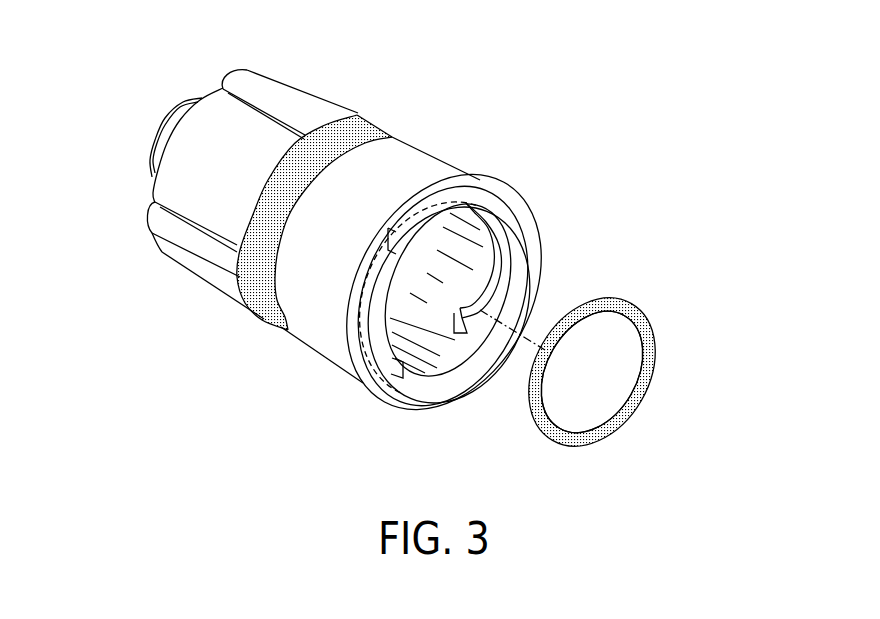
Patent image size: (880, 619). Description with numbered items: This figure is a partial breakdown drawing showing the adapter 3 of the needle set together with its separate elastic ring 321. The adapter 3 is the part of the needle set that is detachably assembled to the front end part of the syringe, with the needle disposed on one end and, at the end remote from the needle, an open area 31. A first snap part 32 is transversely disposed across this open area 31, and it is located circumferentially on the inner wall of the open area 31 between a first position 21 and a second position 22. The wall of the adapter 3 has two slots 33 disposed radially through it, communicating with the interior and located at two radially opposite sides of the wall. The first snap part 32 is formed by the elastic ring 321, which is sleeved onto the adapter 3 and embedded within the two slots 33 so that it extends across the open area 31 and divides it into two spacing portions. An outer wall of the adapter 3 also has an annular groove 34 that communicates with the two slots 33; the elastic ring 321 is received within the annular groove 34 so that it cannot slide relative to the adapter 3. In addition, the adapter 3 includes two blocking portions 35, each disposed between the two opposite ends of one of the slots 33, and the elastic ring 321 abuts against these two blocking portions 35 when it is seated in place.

The adapter 3 is at (360, 80).
The first position 21 is at (382, 227).
The second position 22 is at (392, 385).
The open area 31 is at (418, 300).
The first snap part 32 is at (653, 328).
The elastic ring 321 is at (633, 403).
The slot 33 is at (473, 267).
The annular groove 34 is at (363, 290).
The blocking portion 35 is at (417, 210).